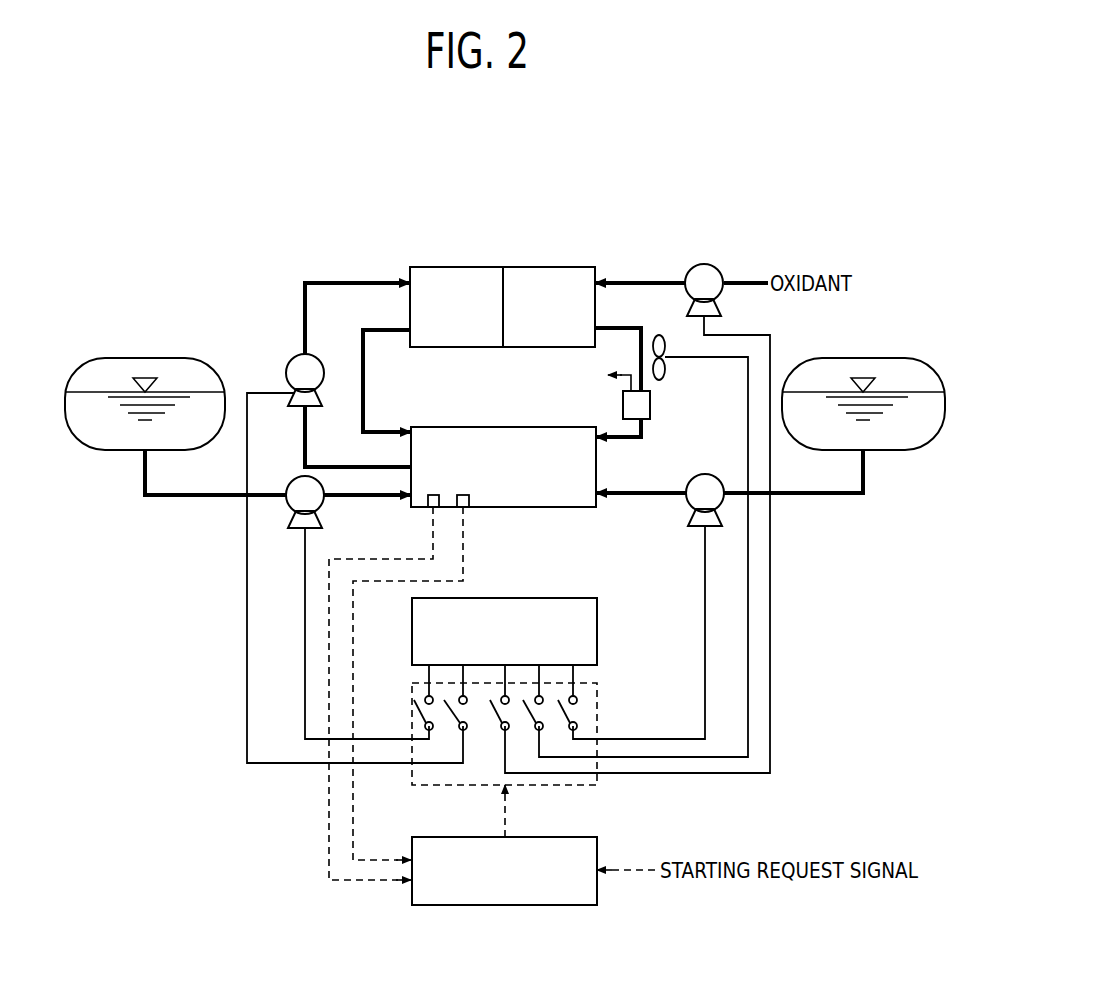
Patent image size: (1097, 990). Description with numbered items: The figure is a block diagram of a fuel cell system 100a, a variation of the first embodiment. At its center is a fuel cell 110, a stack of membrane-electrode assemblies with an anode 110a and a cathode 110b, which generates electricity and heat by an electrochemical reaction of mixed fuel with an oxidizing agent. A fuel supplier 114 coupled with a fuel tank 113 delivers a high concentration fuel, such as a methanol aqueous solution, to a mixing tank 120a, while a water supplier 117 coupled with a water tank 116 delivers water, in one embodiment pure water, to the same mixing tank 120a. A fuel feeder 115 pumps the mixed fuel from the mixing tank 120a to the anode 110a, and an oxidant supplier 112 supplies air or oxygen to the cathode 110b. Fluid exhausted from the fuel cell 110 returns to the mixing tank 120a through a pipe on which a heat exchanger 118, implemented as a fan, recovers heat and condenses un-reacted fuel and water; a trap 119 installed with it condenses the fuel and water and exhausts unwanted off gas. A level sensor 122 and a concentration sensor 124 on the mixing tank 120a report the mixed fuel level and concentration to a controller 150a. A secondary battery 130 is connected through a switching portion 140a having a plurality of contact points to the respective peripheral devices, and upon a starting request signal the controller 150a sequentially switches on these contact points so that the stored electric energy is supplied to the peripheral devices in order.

The fuel cell system 100a is at (266, 203).
The fuel cell 110 is at (417, 267).
The anode 110a is at (476, 282).
The cathode 110b is at (543, 282).
The oxidant supplier 112 is at (704, 264).
The fuel tank 113 is at (891, 358).
The fuel supplier 114 is at (705, 474).
The fuel feeder 115 is at (289, 363).
The water tank 116 is at (117, 358).
The water supplier 117 is at (291, 484).
The heat exchanger 118 is at (664, 373).
The trap 119 is at (651, 410).
The mixing tank 120a is at (451, 427).
The level sensor 122 is at (425, 507).
The concentration sensor 124 is at (473, 507).
The secondary battery 130 is at (576, 598).
The switching portion 140a is at (597, 715).
The controller 150a is at (552, 905).